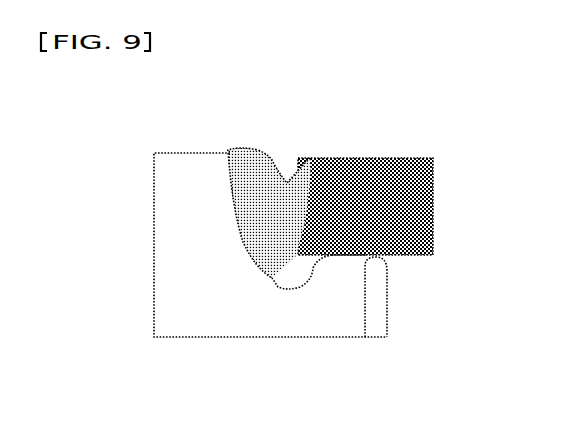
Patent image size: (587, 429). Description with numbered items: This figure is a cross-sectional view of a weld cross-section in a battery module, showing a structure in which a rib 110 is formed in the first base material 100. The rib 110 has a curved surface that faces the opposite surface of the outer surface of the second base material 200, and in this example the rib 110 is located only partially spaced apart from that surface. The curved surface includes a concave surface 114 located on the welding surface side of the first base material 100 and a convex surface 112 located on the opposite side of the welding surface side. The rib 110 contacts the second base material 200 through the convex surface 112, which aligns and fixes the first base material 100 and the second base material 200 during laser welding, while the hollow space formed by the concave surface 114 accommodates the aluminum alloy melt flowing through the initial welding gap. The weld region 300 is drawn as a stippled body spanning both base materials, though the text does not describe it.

The first base material 100 is at (160, 252).
The rib 110 is at (378, 308).
The convex surface 112 is at (371, 258).
The concave surface 114 is at (292, 295).
The second base material 200 is at (434, 214).
The resin body 300 is at (253, 151).